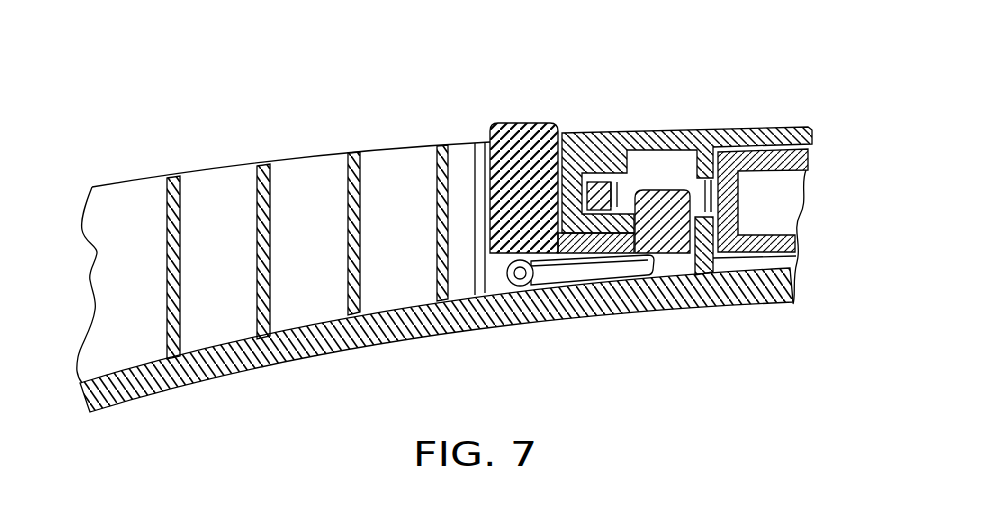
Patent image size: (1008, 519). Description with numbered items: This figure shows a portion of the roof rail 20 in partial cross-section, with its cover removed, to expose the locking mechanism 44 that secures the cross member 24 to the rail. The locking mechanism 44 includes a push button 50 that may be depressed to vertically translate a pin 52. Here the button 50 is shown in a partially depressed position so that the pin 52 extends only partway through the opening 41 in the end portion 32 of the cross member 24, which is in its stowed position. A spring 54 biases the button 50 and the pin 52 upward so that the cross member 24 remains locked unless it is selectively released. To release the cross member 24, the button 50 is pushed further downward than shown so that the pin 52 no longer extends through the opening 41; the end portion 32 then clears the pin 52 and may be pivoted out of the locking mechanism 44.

The first elongated roof rail 20 is at (307, 188).
The first elongated cross member 24 is at (803, 158).
The second end portion 32 is at (595, 178).
The opening 41 is at (625, 195).
The locking mechanism 44 is at (649, 132).
The push button 50 is at (513, 123).
The pin 52 is at (667, 188).
The spring 54 is at (579, 305).